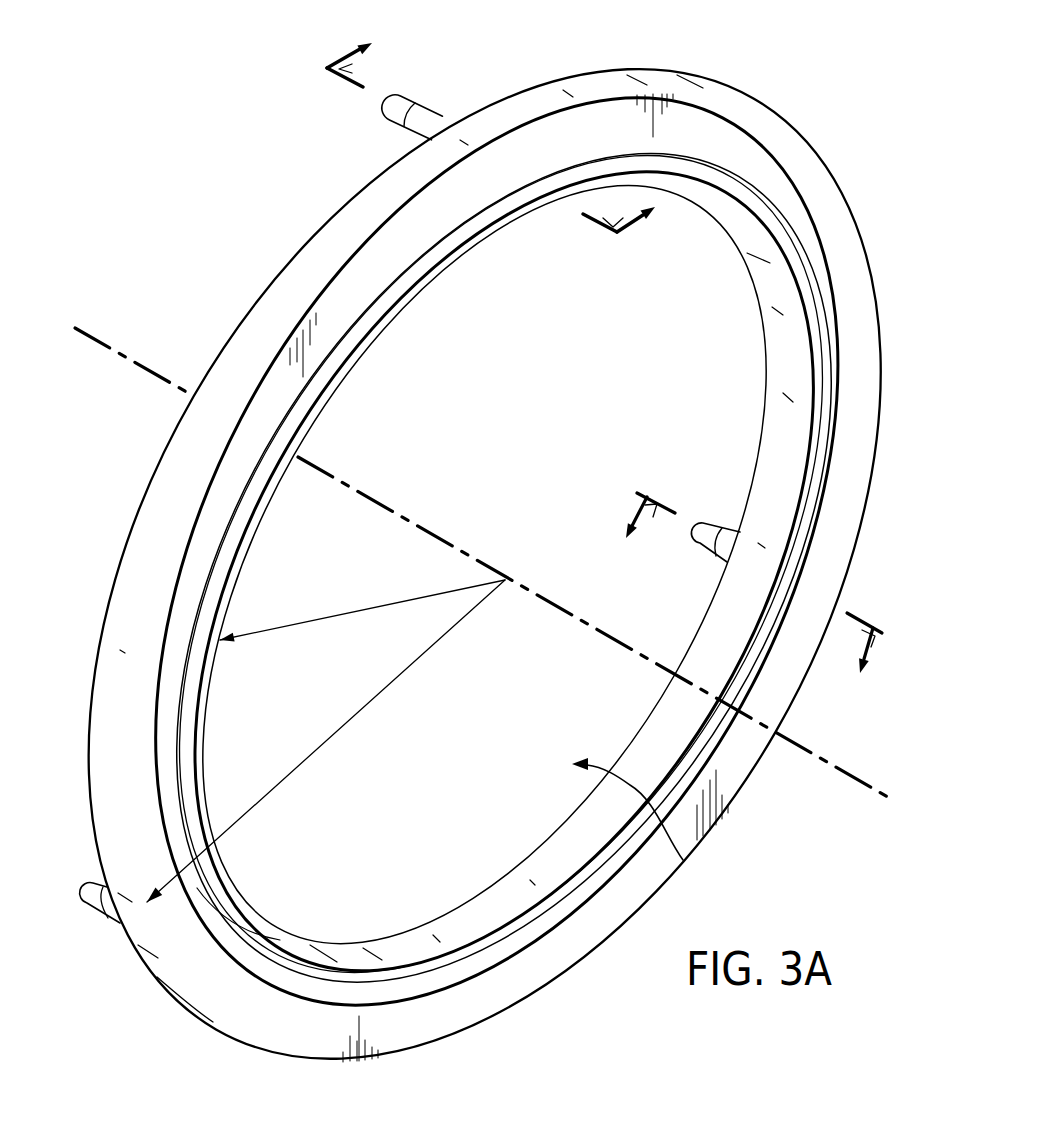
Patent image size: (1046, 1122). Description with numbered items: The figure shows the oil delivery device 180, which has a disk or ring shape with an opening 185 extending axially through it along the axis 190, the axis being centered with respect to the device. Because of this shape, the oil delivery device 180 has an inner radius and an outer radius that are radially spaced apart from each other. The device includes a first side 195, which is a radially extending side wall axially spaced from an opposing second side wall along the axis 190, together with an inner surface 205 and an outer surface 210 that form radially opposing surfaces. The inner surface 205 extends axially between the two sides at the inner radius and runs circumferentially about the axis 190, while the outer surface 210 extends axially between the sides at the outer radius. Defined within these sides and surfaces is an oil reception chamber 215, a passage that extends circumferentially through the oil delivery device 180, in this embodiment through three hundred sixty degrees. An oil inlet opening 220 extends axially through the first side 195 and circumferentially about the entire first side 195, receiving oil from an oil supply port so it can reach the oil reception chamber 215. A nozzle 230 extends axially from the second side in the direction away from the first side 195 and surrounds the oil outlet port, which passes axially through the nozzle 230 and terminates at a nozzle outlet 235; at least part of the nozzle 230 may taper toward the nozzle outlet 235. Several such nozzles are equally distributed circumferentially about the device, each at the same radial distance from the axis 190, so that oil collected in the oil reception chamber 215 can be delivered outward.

The oil delivery device 180 is at (236, 68).
The opening 185 is at (683, 860).
The axis 190 is at (435, 527).
The first side 195 is at (803, 168).
The inner surface 205 is at (475, 906).
The outer surface 210 is at (142, 543).
The oil reception chamber 215 is at (714, 173).
The oil inlet opening 220 is at (796, 234).
The nozzle 230 is at (433, 106).
The nozzle outlet 235 is at (388, 104).